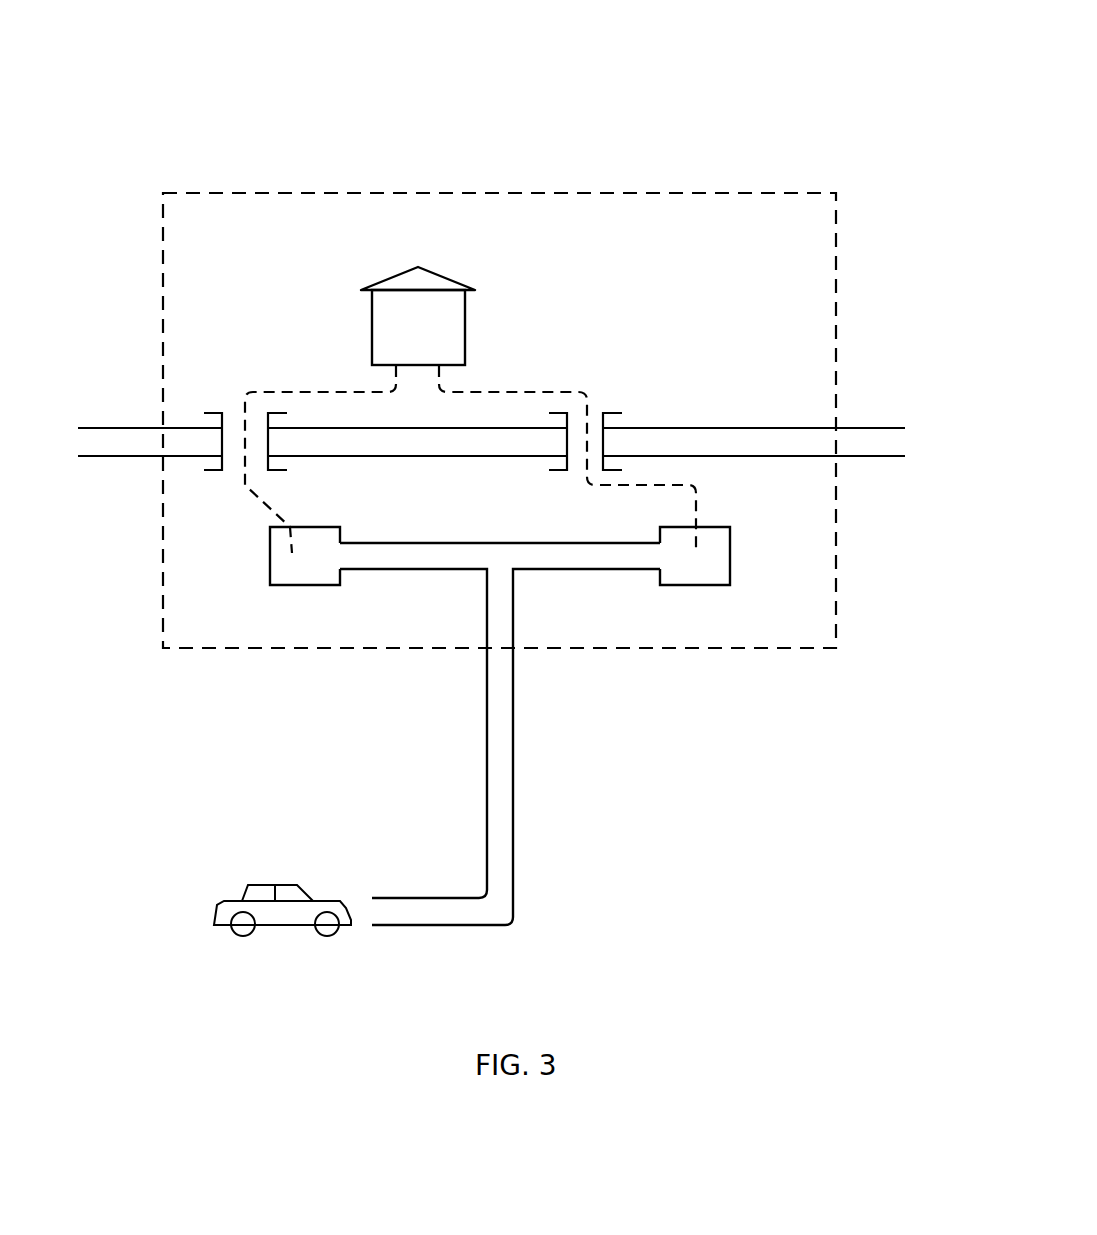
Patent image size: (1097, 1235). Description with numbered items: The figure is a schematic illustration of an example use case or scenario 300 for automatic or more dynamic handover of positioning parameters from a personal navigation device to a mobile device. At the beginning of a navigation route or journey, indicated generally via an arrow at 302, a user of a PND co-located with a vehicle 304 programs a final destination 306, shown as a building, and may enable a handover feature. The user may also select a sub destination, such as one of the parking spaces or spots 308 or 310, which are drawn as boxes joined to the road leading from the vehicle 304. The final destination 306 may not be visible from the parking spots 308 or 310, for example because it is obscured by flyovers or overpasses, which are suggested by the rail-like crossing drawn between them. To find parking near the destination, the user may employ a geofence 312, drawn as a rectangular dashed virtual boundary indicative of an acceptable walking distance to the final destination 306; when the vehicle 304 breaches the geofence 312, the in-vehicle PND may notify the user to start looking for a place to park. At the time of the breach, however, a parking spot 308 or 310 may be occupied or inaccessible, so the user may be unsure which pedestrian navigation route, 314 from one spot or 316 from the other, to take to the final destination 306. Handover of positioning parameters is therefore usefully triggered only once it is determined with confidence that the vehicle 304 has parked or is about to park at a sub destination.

The example use case or scenario 300 is at (748, 73).
The beginning of a navigation route or journey 302 is at (131, 909).
The vehicle 304 is at (259, 885).
The final destination 306 is at (440, 273).
The parking space or spot 308 is at (270, 553).
The parking space or spot 310 is at (730, 550).
The geofence 312 is at (493, 192).
The pedestrian navigation route 314 is at (276, 511).
The pedestrian navigation route 316 is at (657, 486).